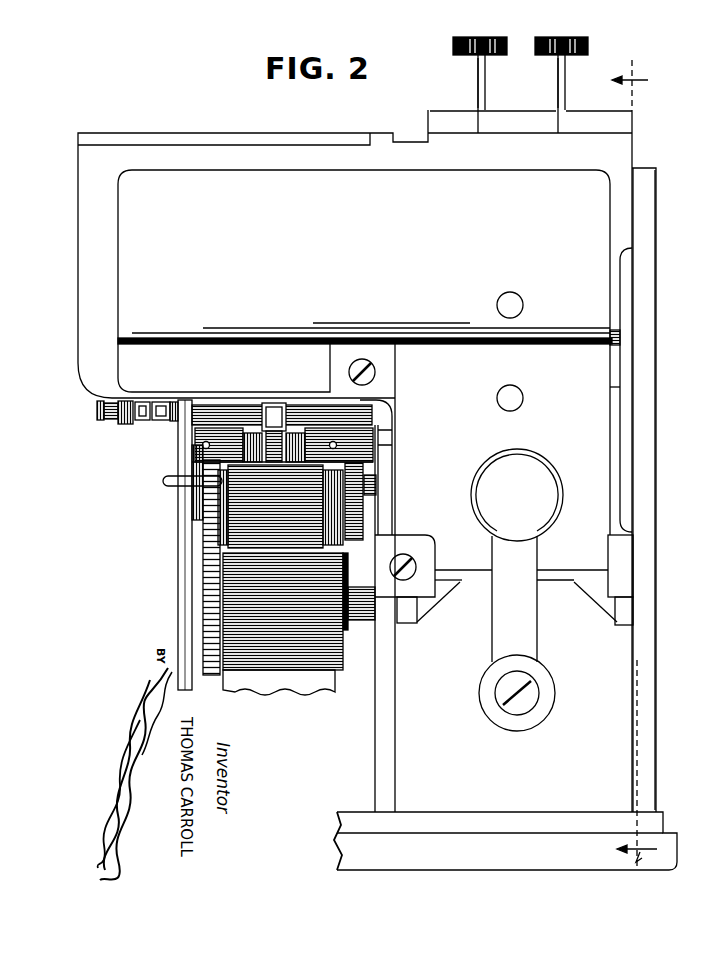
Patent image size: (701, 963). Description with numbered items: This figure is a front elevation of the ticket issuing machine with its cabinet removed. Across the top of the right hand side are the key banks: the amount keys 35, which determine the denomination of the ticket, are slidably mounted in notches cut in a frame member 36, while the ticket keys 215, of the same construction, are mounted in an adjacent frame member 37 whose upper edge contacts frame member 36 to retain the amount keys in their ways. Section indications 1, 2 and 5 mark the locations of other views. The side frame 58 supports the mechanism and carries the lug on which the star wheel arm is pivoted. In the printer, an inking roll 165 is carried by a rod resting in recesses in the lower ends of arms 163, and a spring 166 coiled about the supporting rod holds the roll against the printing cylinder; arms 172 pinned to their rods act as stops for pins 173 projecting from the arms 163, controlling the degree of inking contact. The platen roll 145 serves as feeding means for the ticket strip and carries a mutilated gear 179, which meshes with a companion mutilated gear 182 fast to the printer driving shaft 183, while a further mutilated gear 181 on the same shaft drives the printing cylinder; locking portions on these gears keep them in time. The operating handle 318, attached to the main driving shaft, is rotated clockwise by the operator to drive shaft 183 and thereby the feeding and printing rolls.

The section line 1 is at (632, 64).
The key 2 is at (480, 72).
The key 5 is at (561, 72).
The ticket keys 215 is at (453, 50).
The amount keys 35 is at (537, 46).
The frame member 37 is at (526, 115).
The frame member 36 is at (604, 115).
The side frame 58 is at (648, 297).
The operating handle 318 is at (521, 627).
The mutilated gear 179 is at (212, 676).
The arms 163 is at (320, 437).
The arms 172 is at (381, 440).
The pins 173 is at (372, 487).
The printer driving shaft 183 is at (368, 525).
The spring 166 is at (283, 463).
The mutilated driving gear 181 is at (195, 498).
The mutilated driving gear 182 is at (195, 517).
The inking roll 165 is at (220, 530).
The platen roll 145 is at (300, 667).